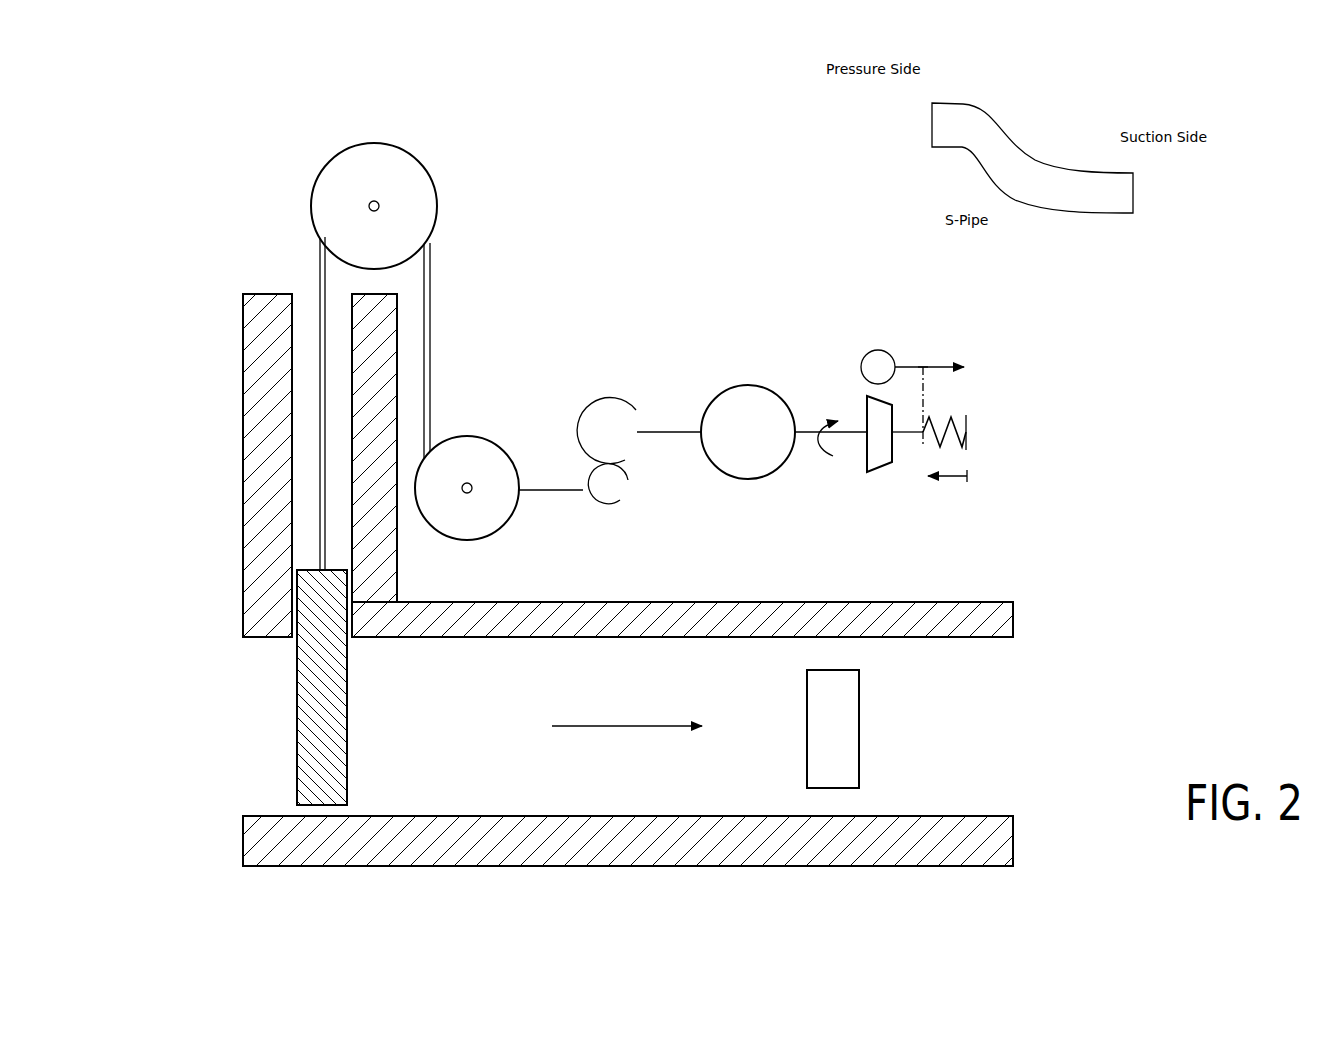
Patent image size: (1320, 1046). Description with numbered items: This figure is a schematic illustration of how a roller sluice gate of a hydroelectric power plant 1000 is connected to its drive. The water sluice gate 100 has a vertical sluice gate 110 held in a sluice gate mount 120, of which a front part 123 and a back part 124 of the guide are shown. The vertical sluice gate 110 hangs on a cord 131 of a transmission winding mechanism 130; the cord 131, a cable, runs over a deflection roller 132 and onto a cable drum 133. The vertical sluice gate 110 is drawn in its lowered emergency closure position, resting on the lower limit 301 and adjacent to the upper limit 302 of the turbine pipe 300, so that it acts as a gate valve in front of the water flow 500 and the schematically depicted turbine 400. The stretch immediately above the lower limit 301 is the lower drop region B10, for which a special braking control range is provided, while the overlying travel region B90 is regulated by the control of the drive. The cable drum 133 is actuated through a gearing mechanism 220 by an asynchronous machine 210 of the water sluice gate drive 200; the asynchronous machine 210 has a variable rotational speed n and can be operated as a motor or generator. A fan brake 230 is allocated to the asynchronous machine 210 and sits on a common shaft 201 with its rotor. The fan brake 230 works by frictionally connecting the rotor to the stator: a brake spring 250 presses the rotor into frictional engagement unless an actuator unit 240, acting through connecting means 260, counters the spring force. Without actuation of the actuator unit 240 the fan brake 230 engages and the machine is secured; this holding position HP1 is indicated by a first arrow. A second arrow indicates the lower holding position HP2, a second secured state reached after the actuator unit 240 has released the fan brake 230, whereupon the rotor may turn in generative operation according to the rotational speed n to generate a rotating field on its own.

The hydroelectric power plant 1000 is at (158, 137).
The water sluice gate 100 is at (474, 185).
The transmission winding mechanism 130 is at (292, 238).
The cord 131 is at (320, 275).
The deflection roller 132 is at (374, 142).
The cable drum 133 is at (473, 436).
The front part of the guide 123 is at (243, 340).
The back part of the guide 124 is at (397, 578).
The sluice gate mount 120 is at (243, 510).
The vertical sluice gate 110 is at (347, 704).
The travel region B90 is at (292, 704).
The lower drop region B10 is at (292, 803).
The upper limit 302 is at (1013, 622).
The lower limit 301 is at (243, 855).
The turbine pipe 300 is at (1016, 716).
The turbine 400 is at (835, 716).
The water flow 500 is at (612, 726).
The water sluice gate drive 200 is at (835, 292).
The gearing mechanism 220 is at (608, 399).
The asynchronous machine 210 is at (748, 385).
The fan brake 230 is at (867, 410).
The common shaft 201 is at (855, 433).
The rotational speed n is at (824, 460).
The actuator unit 240 is at (885, 350).
The connecting means 260 is at (925, 388).
The brake spring 250 is at (968, 443).
The holding position HP1 is at (950, 480).
The lower holding position HP2 is at (952, 365).